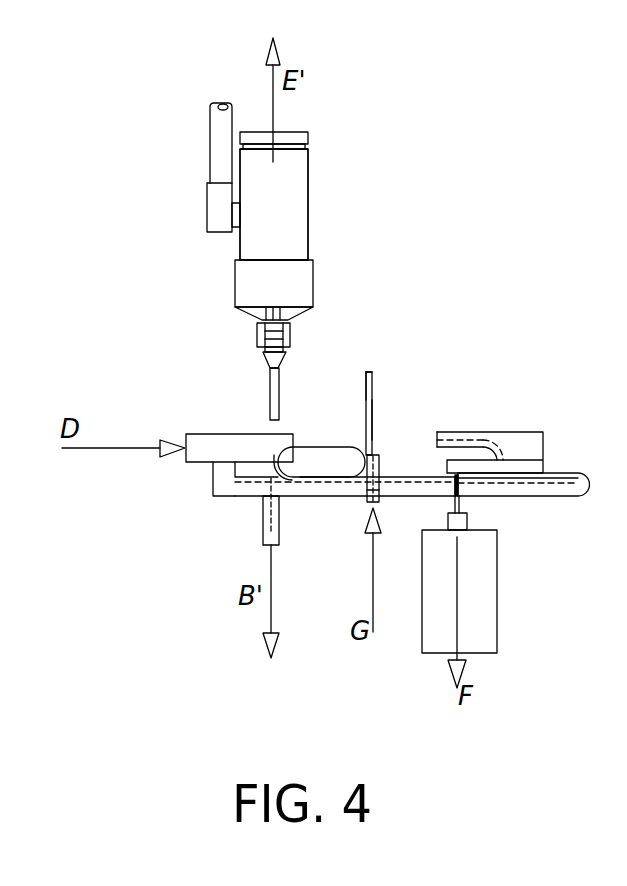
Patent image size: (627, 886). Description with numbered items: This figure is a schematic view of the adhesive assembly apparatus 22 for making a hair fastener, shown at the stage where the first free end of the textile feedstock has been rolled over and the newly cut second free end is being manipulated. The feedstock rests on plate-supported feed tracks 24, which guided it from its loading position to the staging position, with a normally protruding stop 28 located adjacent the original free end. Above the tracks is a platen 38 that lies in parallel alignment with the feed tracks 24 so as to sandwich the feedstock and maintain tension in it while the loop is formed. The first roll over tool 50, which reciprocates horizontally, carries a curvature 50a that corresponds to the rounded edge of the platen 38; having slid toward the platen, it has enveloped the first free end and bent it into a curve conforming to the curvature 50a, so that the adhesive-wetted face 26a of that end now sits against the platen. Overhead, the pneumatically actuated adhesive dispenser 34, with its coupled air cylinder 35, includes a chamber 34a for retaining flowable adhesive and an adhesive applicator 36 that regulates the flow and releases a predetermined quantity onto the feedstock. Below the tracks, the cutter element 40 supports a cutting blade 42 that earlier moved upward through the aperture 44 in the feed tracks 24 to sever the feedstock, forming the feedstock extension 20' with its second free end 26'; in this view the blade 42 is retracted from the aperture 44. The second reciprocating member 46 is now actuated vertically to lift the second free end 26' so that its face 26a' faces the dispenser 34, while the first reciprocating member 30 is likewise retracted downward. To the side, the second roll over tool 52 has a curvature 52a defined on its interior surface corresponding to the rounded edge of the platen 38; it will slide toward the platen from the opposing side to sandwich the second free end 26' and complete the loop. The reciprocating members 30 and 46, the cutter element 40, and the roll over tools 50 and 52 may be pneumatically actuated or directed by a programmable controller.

The adhesive assembly apparatus 22 is at (486, 158).
The adhesive dispenser 34 is at (308, 180).
The chamber 34a is at (295, 245).
The air cylinder 35 is at (212, 153).
The adhesive applicator 36 is at (280, 388).
The first roll over tool 50 is at (193, 434).
The curvature 50a is at (295, 442).
The face 26a is at (321, 446).
The face 26a' is at (402, 363).
The second free end 26' is at (403, 405).
The feedstock extension 20' is at (403, 413).
The platen 38 is at (373, 447).
The second reciprocating member 46 is at (360, 508).
The stop 28 is at (217, 473).
The feed tracks 24 is at (318, 493).
The first reciprocating member 30 is at (262, 526).
The second roll over tool 52 is at (522, 432).
The curvature 52a is at (495, 446).
The aperture 44 is at (456, 503).
The cutting blade 42 is at (468, 512).
The cutter element 40 is at (497, 598).